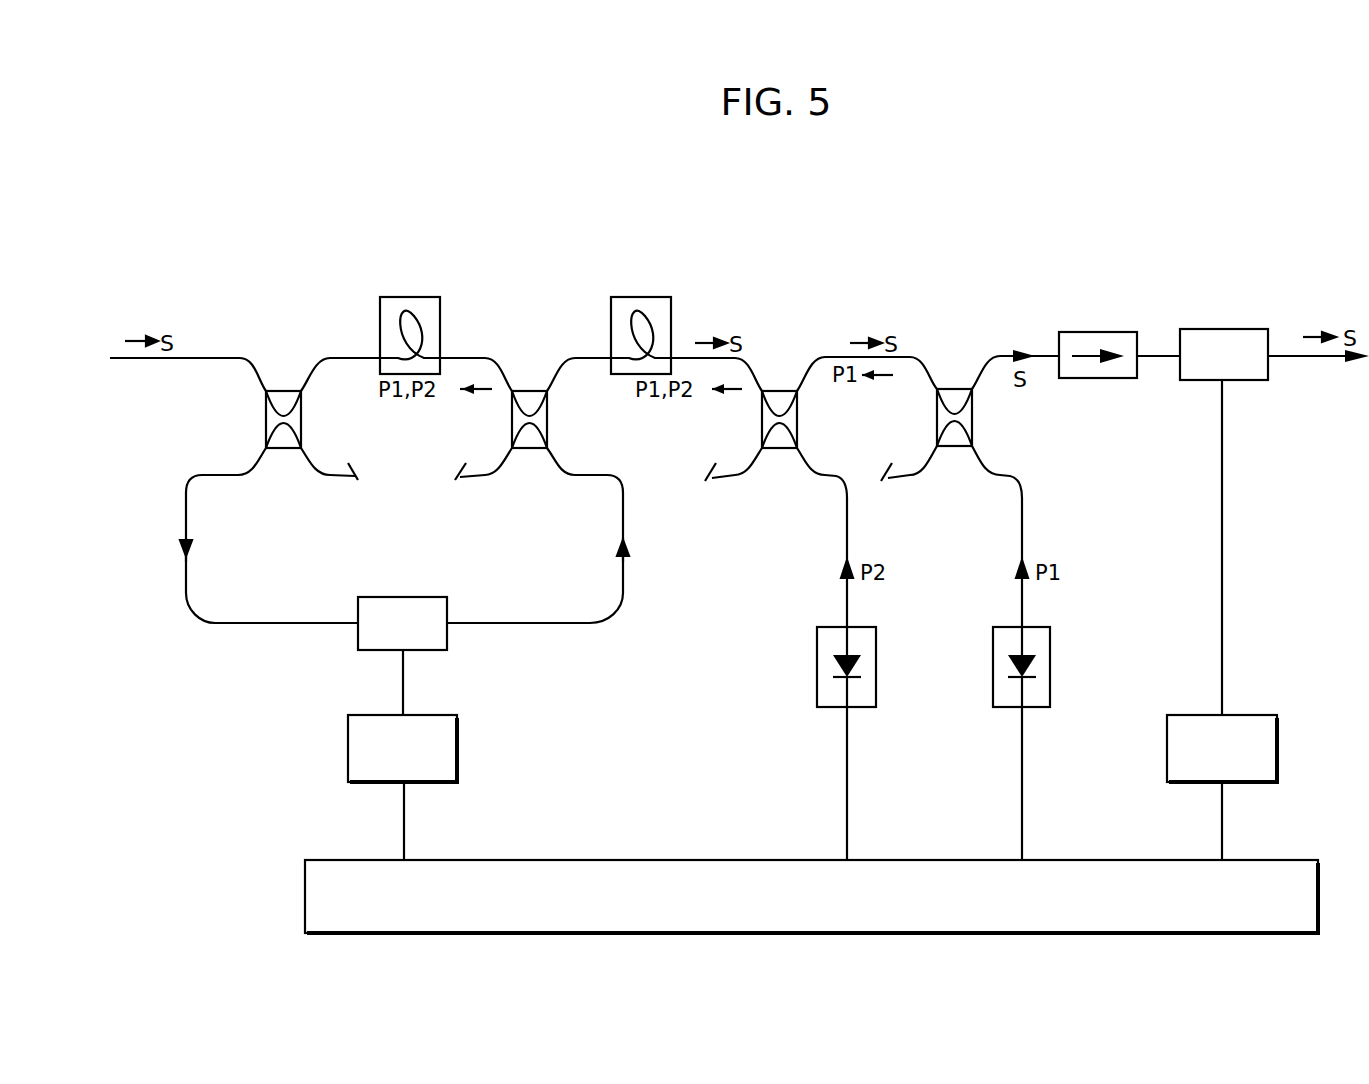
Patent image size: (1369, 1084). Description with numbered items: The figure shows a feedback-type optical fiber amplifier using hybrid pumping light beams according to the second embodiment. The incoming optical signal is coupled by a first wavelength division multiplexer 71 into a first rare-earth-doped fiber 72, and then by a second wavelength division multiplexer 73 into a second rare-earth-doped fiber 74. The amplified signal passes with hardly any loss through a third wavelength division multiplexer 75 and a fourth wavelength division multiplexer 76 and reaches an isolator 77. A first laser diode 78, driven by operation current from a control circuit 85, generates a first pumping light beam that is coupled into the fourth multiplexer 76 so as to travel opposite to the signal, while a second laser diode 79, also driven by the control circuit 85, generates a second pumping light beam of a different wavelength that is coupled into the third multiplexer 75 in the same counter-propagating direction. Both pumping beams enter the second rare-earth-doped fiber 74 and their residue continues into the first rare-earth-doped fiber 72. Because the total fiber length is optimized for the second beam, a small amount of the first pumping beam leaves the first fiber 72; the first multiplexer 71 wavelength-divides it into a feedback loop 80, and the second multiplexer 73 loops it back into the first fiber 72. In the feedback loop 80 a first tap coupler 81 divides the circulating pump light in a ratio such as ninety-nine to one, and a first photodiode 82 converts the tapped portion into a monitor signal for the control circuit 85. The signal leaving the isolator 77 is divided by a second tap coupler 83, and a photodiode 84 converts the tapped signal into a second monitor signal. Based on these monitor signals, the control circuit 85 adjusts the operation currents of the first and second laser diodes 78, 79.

The first wavelength division multiplexer 71 is at (284, 391).
The first rare-earth-doped fiber 72 is at (407, 297).
The second wavelength division multiplexer 73 is at (527, 391).
The second rare-earth-doped fiber 74 is at (637, 297).
The third wavelength division multiplexer 75 is at (779, 391).
The fourth wavelength division multiplexer 76 is at (957, 389).
The isolator 77 is at (1100, 332).
The first laser diode 78 is at (993, 672).
The second laser diode 79 is at (817, 661).
The feedback loop 80 is at (542, 648).
The first tap coupler 81 is at (408, 597).
The first photodiode 82 is at (348, 752).
The second tap coupler 83 is at (1232, 329).
The photodiode 84 is at (1167, 752).
The control circuit 85 is at (676, 858).